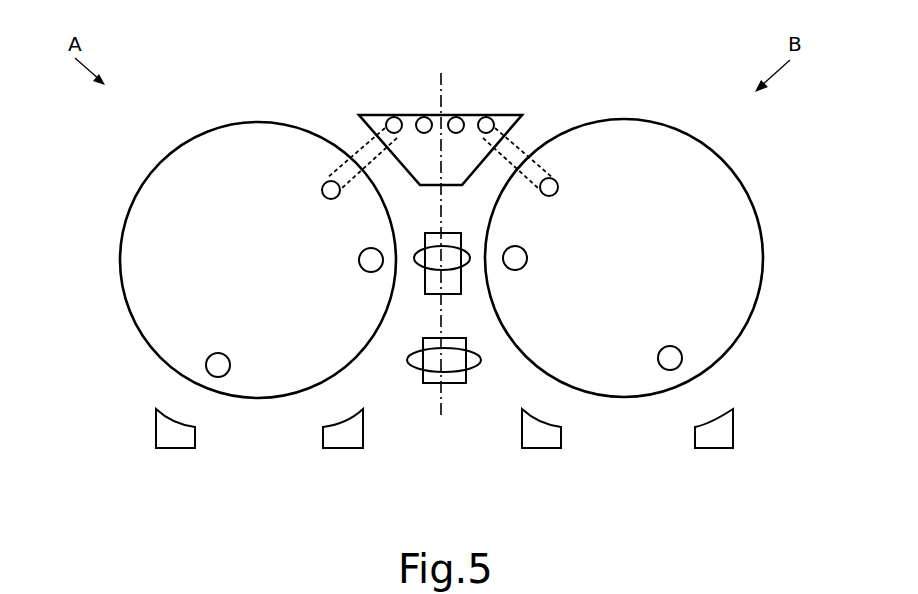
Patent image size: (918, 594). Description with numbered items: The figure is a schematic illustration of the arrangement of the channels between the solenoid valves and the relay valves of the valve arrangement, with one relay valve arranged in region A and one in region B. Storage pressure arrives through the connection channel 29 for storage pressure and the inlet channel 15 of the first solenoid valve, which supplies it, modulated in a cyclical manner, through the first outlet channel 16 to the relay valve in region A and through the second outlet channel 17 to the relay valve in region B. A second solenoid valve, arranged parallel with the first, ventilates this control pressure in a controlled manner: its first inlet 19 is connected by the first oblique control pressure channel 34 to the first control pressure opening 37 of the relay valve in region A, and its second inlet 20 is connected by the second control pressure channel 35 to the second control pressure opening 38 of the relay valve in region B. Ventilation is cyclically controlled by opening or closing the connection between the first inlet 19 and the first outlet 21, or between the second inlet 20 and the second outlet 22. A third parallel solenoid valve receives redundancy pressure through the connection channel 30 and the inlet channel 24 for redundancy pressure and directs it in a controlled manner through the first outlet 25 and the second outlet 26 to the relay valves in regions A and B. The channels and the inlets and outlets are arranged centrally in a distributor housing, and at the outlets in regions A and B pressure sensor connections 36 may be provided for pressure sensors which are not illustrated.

The inlet channel 15 is at (463, 265).
The first outlet channel 16 is at (368, 258).
The second outlet channel 17 is at (518, 256).
The first inlet 19 is at (392, 117).
The second inlet 20 is at (487, 117).
The first outlet 21 is at (421, 117).
The second outlet 22 is at (456, 117).
The inlet channel for redundancy pressure 24 is at (467, 383).
The first outlet 25 is at (206, 365).
The second outlet 26 is at (683, 358).
The connection channel for storage pressure 29 is at (452, 295).
The connection channel 30 is at (433, 383).
The first oblique control pressure channel 34 is at (357, 152).
The second control pressure channel 35 is at (520, 150).
The pressure sensor connections 36 is at (323, 440).
The first control pressure opening 37 is at (329, 188).
The second control pressure opening 38 is at (551, 185).